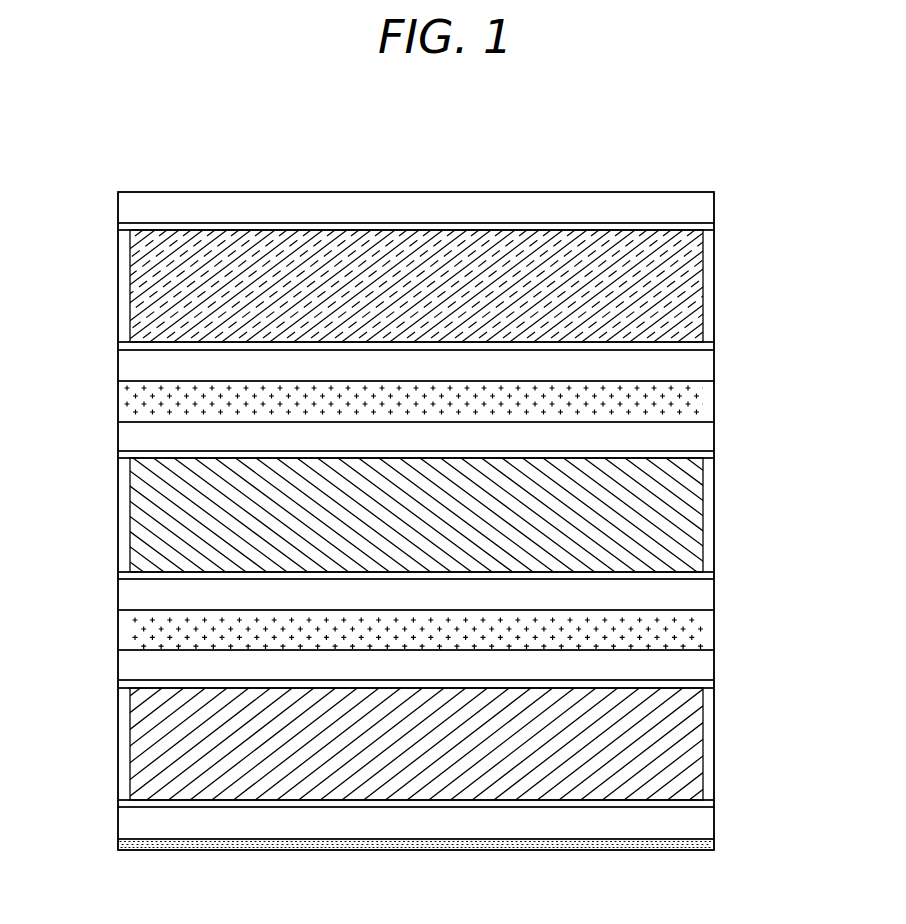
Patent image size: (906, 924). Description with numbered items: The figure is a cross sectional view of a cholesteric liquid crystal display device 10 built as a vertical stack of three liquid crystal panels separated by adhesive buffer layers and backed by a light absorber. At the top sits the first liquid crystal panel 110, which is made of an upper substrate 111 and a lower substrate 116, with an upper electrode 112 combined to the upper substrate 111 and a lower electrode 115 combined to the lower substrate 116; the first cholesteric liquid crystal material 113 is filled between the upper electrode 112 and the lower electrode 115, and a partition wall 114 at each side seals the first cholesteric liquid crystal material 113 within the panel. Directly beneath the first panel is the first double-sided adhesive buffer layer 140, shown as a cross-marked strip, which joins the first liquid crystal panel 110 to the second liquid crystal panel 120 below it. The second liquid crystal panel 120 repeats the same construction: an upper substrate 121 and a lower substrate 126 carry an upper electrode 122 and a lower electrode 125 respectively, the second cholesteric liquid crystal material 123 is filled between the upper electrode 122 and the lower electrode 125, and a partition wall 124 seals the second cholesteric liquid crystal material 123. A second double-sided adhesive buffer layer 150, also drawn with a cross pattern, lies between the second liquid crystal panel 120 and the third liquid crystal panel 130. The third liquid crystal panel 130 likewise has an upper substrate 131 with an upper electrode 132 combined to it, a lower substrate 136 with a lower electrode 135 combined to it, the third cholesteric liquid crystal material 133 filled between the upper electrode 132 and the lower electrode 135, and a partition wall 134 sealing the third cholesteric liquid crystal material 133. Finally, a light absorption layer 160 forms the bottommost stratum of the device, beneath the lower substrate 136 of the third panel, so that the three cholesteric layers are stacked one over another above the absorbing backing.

The cholesteric liquid crystal display device 10 is at (403, 117).
The first liquid crystal panel 110 is at (98, 195).
The upper substrate 111 is at (264, 196).
The upper electrode 112 is at (707, 226).
The first cholesteric liquid crystal material 113 is at (469, 262).
The partition wall 114 is at (706, 290).
The lower electrode 115 is at (707, 345).
The lower substrate 116 is at (706, 364).
The second liquid crystal panel 120 is at (98, 423).
The upper substrate 121 is at (706, 433).
The upper electrode 122 is at (707, 454).
The second cholesteric liquid crystal material 123 is at (672, 507).
The partition wall 124 is at (706, 529).
The lower electrode 125 is at (707, 574).
The lower substrate 126 is at (706, 594).
The third liquid crystal panel 130 is at (98, 652).
The upper substrate 131 is at (706, 663).
The upper electrode 132 is at (707, 684).
The third cholesteric liquid crystal material 133 is at (672, 730).
The partition wall 134 is at (706, 754).
The lower electrode 135 is at (707, 802).
The lower substrate 136 is at (706, 823).
The first double-sided adhesive buffer layer 140 is at (128, 400).
The second double-sided adhesive buffer layer 150 is at (128, 630).
The light absorption layer 160 is at (128, 844).